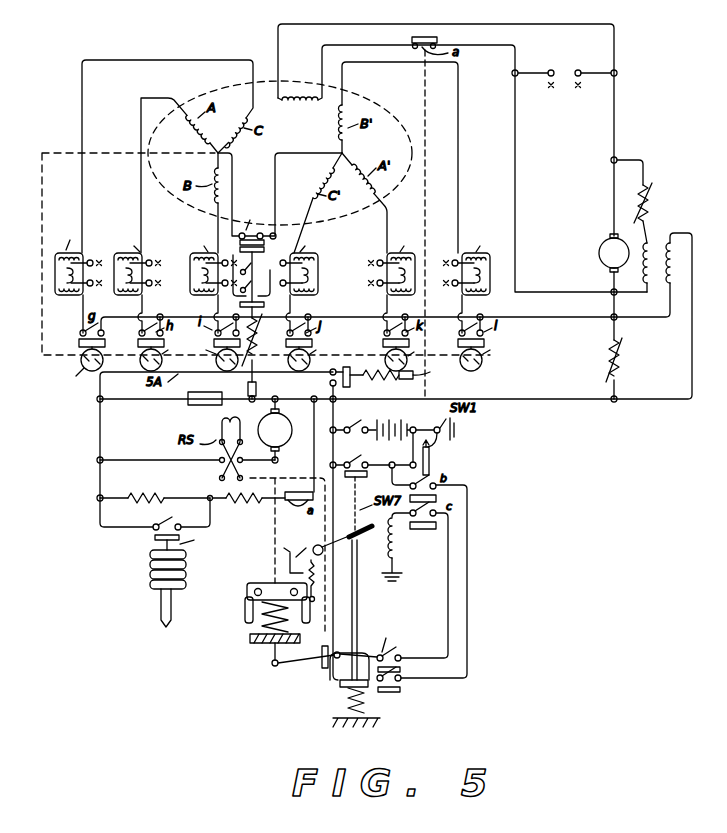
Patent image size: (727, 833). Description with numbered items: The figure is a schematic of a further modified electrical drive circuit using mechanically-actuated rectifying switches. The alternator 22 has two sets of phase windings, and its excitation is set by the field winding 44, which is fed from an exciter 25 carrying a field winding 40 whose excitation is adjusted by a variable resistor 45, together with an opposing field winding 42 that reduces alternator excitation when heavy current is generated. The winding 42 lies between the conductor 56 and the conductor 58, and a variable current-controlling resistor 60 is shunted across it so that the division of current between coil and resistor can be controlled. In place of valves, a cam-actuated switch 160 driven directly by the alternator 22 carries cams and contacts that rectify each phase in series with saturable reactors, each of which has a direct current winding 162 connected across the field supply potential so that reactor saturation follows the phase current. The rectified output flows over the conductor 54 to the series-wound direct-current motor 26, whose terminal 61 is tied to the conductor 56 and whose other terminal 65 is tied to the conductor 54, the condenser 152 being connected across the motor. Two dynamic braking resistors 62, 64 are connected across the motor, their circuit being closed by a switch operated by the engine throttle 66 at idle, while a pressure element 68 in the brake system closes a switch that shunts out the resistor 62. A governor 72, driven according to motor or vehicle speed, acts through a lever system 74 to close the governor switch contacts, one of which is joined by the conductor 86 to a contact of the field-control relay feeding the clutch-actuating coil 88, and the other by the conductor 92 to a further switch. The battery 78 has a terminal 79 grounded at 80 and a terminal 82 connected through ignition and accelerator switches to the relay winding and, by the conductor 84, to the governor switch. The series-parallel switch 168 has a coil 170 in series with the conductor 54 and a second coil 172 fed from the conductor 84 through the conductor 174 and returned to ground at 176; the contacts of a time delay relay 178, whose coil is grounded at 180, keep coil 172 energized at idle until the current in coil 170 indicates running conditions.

The alternator 22 is at (265, 81).
The motor 25 is at (593, 243).
The motor 26 is at (286, 436).
The field winding 40 is at (652, 234).
The field winding 42 is at (676, 258).
The field winding 44 is at (295, 92).
The variable resistor 45 is at (650, 198).
The conductor 54 is at (110, 402).
The conductor 56 is at (510, 399).
The conductor 58 is at (538, 316).
The variable current-controlling resistor 60 is at (628, 362).
The terminal 61 is at (284, 408).
The dynamic braking resistor 62 is at (148, 498).
The dynamic braking resistor 64 is at (242, 506).
The conductor 65 is at (108, 460).
The engine throttle 66 is at (300, 550).
The pressure element 68 is at (188, 566).
The governor 72 is at (241, 638).
The lever system 74 is at (310, 666).
The battery 78 is at (421, 456).
The terminal 79 is at (448, 420).
The ground 80 is at (458, 430).
The terminal 82 is at (388, 442).
The conductor 84 is at (352, 492).
The conductor 86 is at (446, 588).
The clutch-actuating coil 88 is at (386, 546).
The conductor 92 is at (470, 584).
The condenser 152 is at (196, 405).
The cam-actuated switch 160 is at (498, 356).
The direct current winding 162 is at (114, 256).
The switch 168 is at (260, 268).
The energizing coil 170 is at (258, 334).
The second coil 172 is at (246, 386).
The conductor 174 is at (348, 366).
The ground connection 176 is at (330, 384).
The time delay relay 178 is at (410, 377).
The ground 180 is at (388, 422).